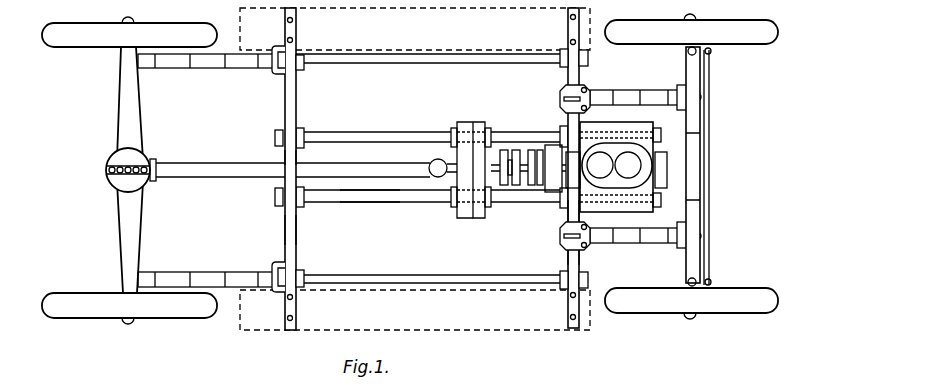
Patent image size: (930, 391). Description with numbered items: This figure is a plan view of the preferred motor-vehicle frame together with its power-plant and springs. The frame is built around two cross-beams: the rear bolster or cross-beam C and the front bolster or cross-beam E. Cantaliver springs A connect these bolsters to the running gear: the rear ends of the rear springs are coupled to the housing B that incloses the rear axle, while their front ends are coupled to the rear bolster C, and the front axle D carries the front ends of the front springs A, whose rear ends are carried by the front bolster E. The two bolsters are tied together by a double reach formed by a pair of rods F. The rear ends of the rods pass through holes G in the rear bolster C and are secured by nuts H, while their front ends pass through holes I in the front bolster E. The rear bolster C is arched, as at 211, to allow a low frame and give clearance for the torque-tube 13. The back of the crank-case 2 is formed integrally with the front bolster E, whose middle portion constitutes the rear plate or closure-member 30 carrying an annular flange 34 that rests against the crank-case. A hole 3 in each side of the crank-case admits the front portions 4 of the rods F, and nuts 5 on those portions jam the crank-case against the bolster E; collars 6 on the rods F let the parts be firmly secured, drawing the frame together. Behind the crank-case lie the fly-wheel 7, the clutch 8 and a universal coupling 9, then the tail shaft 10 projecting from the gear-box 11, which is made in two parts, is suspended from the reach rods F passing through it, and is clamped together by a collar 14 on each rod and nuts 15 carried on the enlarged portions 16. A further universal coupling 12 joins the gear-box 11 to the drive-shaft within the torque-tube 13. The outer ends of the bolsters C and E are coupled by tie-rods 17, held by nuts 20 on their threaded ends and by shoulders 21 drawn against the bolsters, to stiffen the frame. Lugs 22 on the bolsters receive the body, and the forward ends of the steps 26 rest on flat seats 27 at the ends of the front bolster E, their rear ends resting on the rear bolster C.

The crank-case 2 is at (643, 206).
The hole 3 is at (641, 132).
The front portions of the rods 4 is at (606, 139).
The nuts 5 is at (660, 200).
The collars 6 is at (297, 136).
The fly-wheel 7 is at (543, 201).
The clutch 8 is at (505, 150).
The universal coupling 9 is at (516, 150).
The tail shaft 10 is at (461, 207).
The gear-box 11 is at (469, 122).
The universal coupling 12 is at (412, 191).
The torque-tube 13 is at (247, 171).
The collar 14 is at (483, 122).
The nuts 15 is at (452, 133).
The enlarged portions of the rods 16 is at (478, 210).
The tie-rods 17 is at (474, 57).
The nuts 20 is at (277, 271).
The shoulders 21 is at (566, 54).
The lugs 22 is at (562, 90).
The steps 26 is at (285, 340).
The seat 27 is at (571, 328).
The rear plate or closure-member 30 is at (587, 172).
The annular flange 34 is at (587, 158).
The arched portion 211 is at (287, 156).
The cantaliver springs A is at (207, 62).
The housing B is at (125, 230).
The rear bolster or cross-beam C is at (285, 229).
The front axle D is at (700, 176).
The front bolster or cross-beam E is at (568, 253).
The rods F is at (362, 199).
The holes G is at (278, 205).
The nuts H is at (280, 134).
The holes I is at (567, 212).